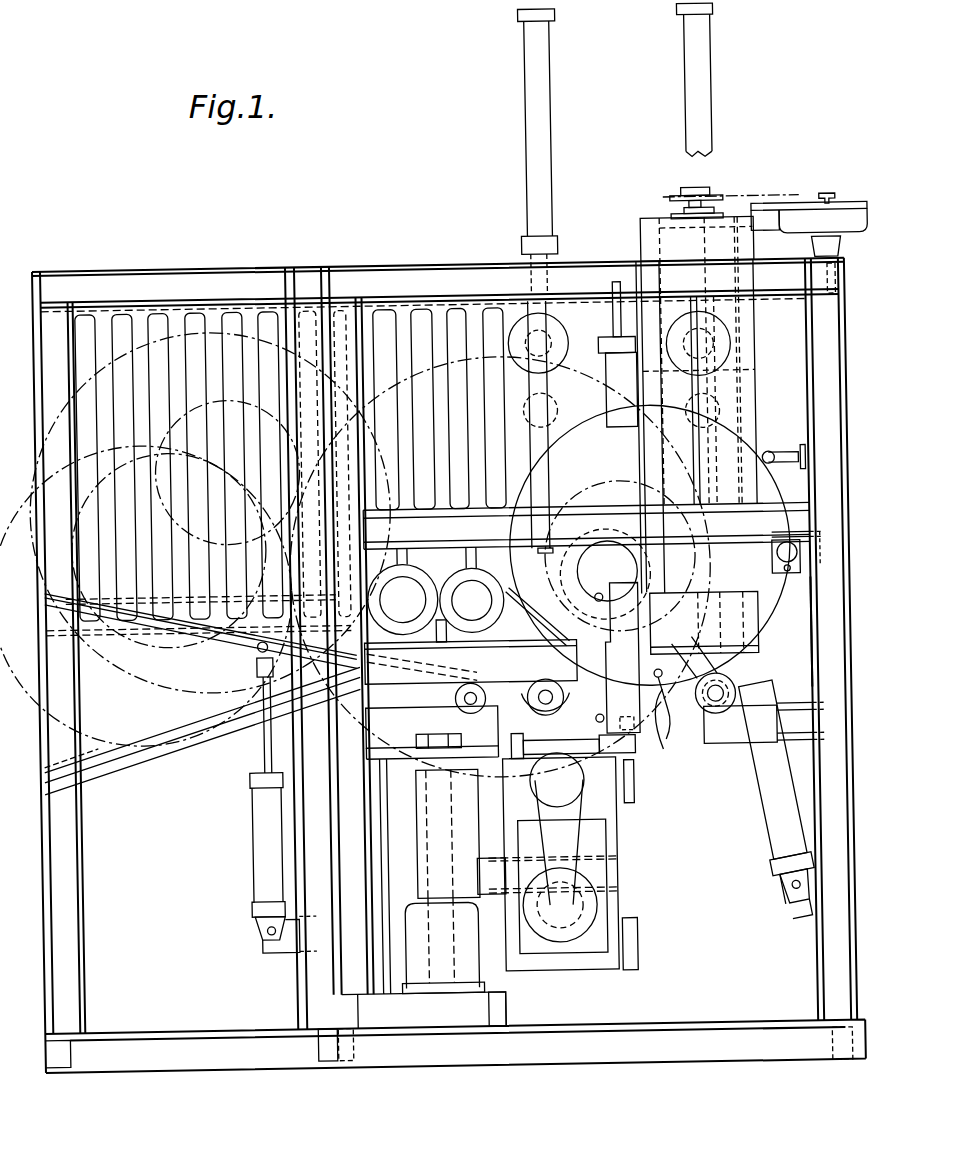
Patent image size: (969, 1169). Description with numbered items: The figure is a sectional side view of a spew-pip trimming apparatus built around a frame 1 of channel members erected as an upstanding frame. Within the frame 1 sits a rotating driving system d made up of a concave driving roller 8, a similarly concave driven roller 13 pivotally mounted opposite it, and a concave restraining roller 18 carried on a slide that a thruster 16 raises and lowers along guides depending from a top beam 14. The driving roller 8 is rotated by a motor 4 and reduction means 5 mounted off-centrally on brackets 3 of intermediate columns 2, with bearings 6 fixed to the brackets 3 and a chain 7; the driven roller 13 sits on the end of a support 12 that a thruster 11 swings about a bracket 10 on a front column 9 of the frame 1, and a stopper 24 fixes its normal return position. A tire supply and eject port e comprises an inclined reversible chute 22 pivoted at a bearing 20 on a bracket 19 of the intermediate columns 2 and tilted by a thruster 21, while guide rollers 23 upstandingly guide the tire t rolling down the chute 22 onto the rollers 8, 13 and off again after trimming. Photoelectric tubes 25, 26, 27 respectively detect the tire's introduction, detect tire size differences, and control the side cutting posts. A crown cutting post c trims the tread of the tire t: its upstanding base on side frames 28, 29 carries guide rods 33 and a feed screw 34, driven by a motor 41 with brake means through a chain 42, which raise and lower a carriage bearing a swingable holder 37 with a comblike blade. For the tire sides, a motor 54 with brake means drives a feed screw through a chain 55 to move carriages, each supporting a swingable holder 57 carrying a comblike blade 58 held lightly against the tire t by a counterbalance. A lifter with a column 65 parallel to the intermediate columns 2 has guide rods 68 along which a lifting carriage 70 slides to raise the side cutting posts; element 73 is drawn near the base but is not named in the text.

The frame 1 is at (840, 368).
The intermediate columns 2 is at (290, 690).
The brackets 3 is at (570, 668).
The motor 4 is at (400, 585).
The reduction means 5 is at (468, 588).
The bearings 6 is at (619, 692).
The chain 7 is at (540, 605).
The concave driving roller 8 is at (557, 828).
The front column 9 is at (828, 682).
The bracket 10 is at (795, 588).
The thruster 11 is at (778, 842).
The support 12 is at (728, 700).
The concave driven roller 13 is at (700, 712).
The top beam 14 is at (420, 320).
The thruster 16 is at (525, 208).
The concave restraining roller 18 is at (725, 338).
The bracket 19 is at (410, 735).
The bearing 20 is at (462, 712).
The thruster 21 is at (248, 880).
The inclined reversible chute 22 is at (225, 650).
The guide rollers 23 is at (385, 320).
The stopper 24 is at (725, 758).
The photoelectric tube 25 is at (725, 700).
The photoelectric tube 26 is at (590, 606).
The photoelectric tube 27 is at (588, 732).
The side frame 28 is at (770, 268).
The side frame 29 is at (796, 495).
The guide rods 33 is at (665, 450).
The feed screw 34 is at (705, 420).
The swingable holder 37 is at (600, 352).
The motor 41 is at (840, 230).
The chain 42 is at (728, 207).
The motor 54 is at (572, 955).
The chain 55 is at (607, 830).
The swingable holder 57 is at (628, 782).
The comblike blade 58 is at (618, 560).
The column 65 is at (430, 866).
The guide rods 68 is at (428, 800).
The lifting carriage 70 is at (494, 876).
The base 73 is at (476, 985).
The crown cutting post c is at (605, 288).
The rotating driving system d is at (650, 760).
The tire supply and eject port e is at (30, 312).
The tire t is at (560, 476).